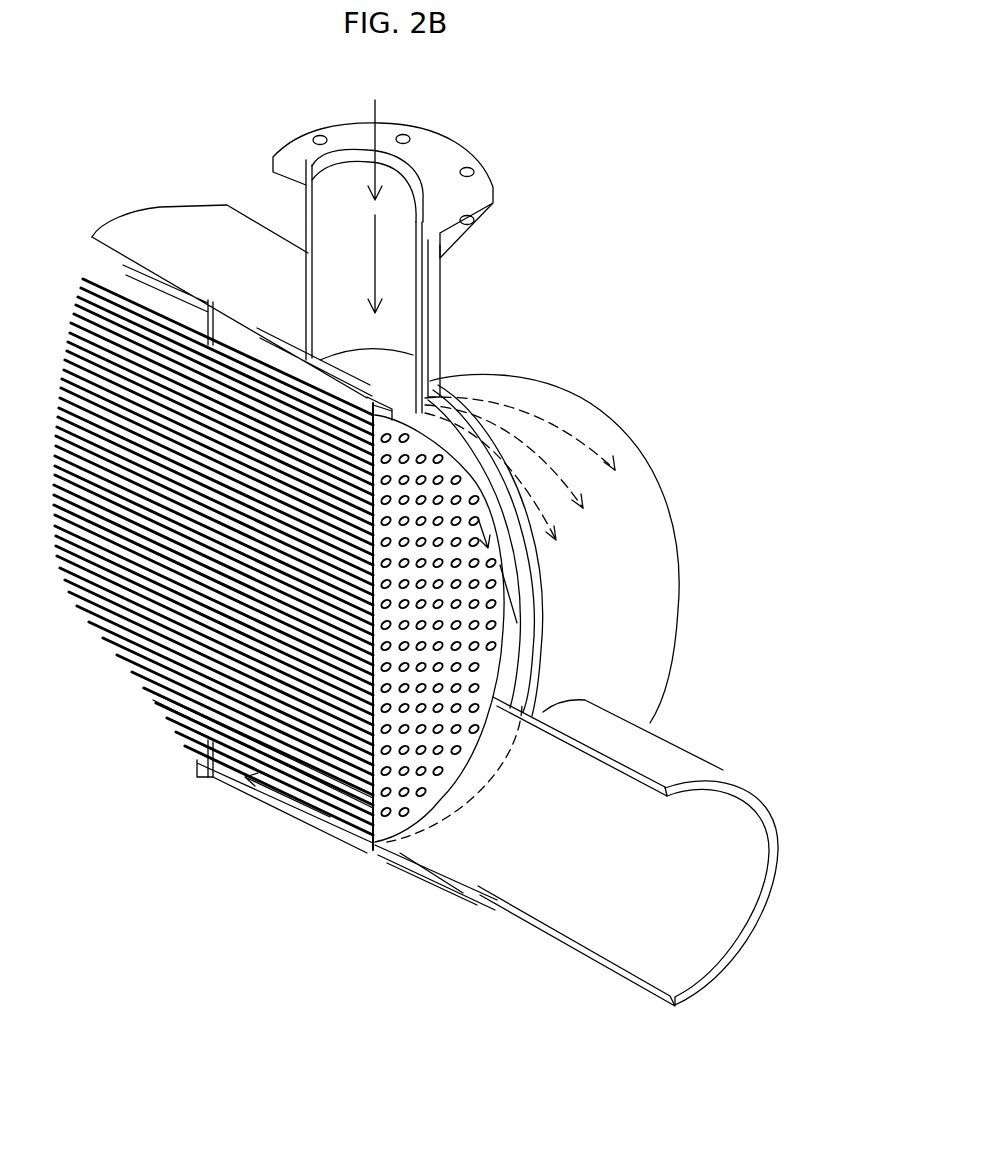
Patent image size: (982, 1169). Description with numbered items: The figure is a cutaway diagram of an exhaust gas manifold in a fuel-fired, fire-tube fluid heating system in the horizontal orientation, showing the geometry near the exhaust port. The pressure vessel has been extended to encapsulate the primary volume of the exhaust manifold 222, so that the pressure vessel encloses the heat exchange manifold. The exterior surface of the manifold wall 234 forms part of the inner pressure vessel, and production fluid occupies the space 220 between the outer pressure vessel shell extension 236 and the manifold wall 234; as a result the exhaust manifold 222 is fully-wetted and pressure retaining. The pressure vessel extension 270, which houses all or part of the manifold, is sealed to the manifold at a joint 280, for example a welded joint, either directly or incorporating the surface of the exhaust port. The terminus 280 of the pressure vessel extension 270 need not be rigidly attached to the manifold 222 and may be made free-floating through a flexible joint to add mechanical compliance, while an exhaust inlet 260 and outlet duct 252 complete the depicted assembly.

The space 220 is at (203, 223).
The exhaust manifold 222 is at (387, 857).
The manifold wall 234 is at (487, 543).
The outer pressure vessel shell extension 236 is at (682, 548).
The outlet pipe 252 is at (720, 902).
The inlet pipe 260 is at (373, 108).
The pressure vessel extension 270 is at (417, 883).
The joint 280 is at (477, 907).